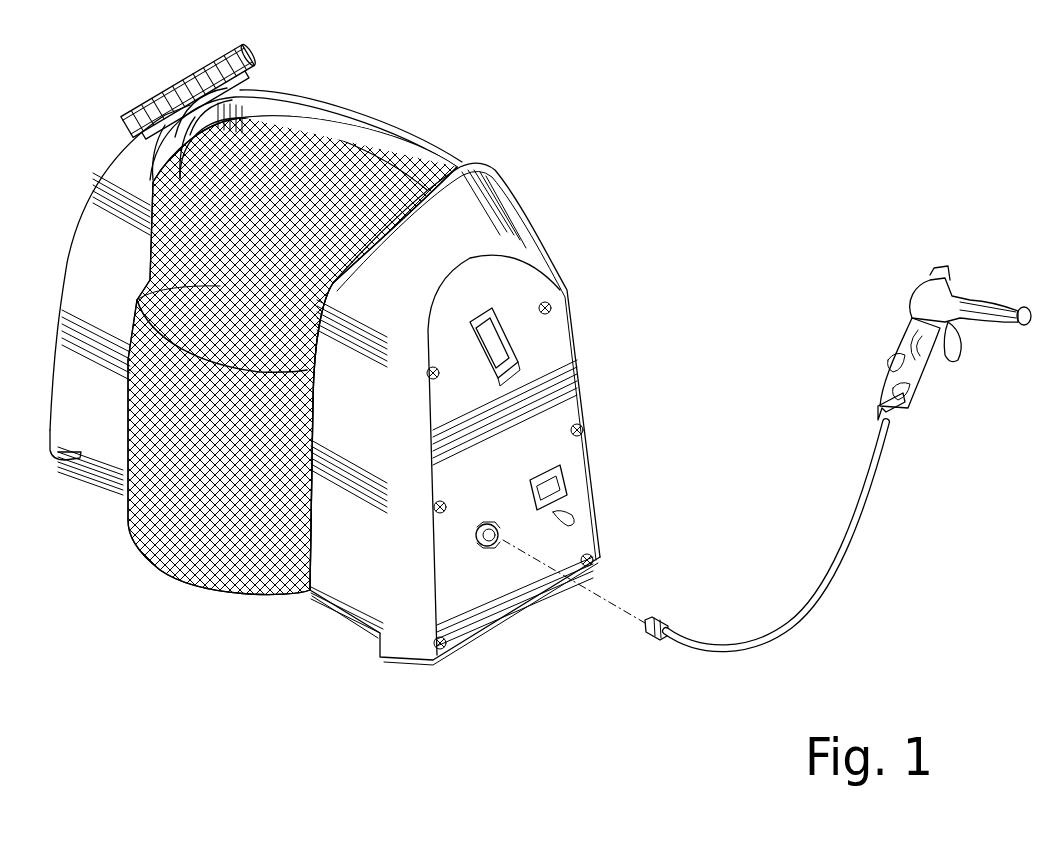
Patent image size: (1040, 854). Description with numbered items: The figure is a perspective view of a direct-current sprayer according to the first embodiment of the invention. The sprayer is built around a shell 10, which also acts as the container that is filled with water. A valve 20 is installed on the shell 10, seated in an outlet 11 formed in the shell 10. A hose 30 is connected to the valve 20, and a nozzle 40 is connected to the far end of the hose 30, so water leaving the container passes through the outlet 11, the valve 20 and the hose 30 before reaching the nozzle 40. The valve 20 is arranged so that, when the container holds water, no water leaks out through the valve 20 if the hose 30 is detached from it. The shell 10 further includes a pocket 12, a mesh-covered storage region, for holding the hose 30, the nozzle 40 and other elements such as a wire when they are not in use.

The shell 10 is at (350, 587).
The outlet 11 is at (477, 542).
The pocket 12 is at (187, 532).
The valve 20 is at (500, 540).
The hose 30 is at (867, 470).
The nozzle 40 is at (910, 360).